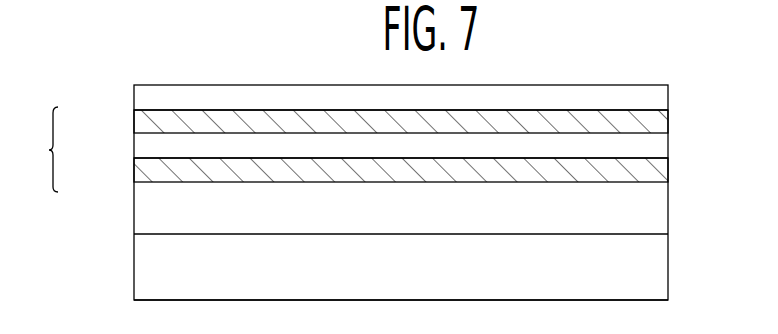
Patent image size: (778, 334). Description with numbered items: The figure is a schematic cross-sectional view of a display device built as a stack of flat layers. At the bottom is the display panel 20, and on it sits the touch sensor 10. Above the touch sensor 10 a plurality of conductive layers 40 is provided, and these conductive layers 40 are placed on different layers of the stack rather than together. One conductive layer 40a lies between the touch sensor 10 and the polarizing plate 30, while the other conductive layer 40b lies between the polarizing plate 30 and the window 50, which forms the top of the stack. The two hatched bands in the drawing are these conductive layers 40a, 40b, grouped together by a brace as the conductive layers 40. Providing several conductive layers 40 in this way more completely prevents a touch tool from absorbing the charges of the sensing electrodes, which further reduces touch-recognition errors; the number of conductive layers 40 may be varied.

The touch sensor 10 is at (657, 210).
The display panel 20 is at (657, 283).
The polarizing plate 30 is at (658, 148).
The conductive layers 40 is at (44, 149).
The conductive layer 40a is at (135, 163).
The conductive layer 40b is at (135, 115).
The window 50 is at (658, 97).